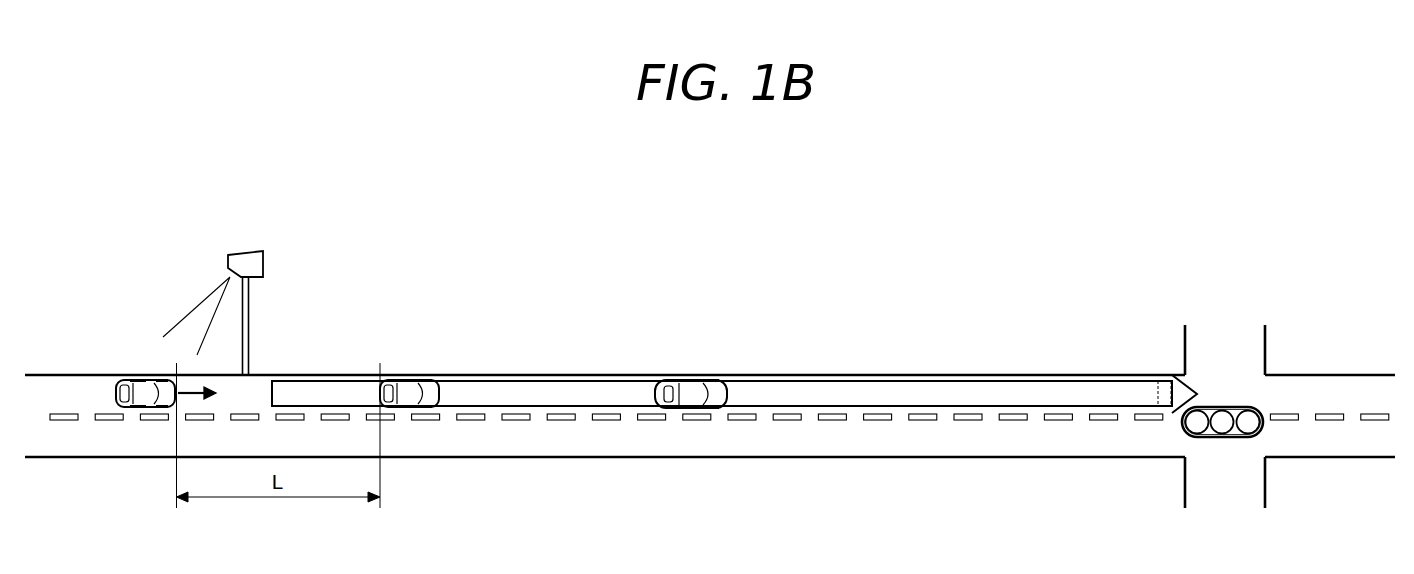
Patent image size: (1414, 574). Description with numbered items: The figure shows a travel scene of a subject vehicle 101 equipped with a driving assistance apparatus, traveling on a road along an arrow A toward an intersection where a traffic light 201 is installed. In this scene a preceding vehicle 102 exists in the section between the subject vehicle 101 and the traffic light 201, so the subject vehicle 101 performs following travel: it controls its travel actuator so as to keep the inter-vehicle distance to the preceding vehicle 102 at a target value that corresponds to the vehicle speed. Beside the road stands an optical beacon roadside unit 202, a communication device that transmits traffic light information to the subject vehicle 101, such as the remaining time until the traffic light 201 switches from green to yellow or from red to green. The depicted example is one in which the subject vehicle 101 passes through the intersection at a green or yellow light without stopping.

The subject vehicle 101 is at (150, 380).
The preceding vehicle 102 is at (407, 381).
The traffic light 201 is at (1238, 437).
The optical beacon roadside unit 202 is at (250, 251).
The arrow A is at (885, 381).